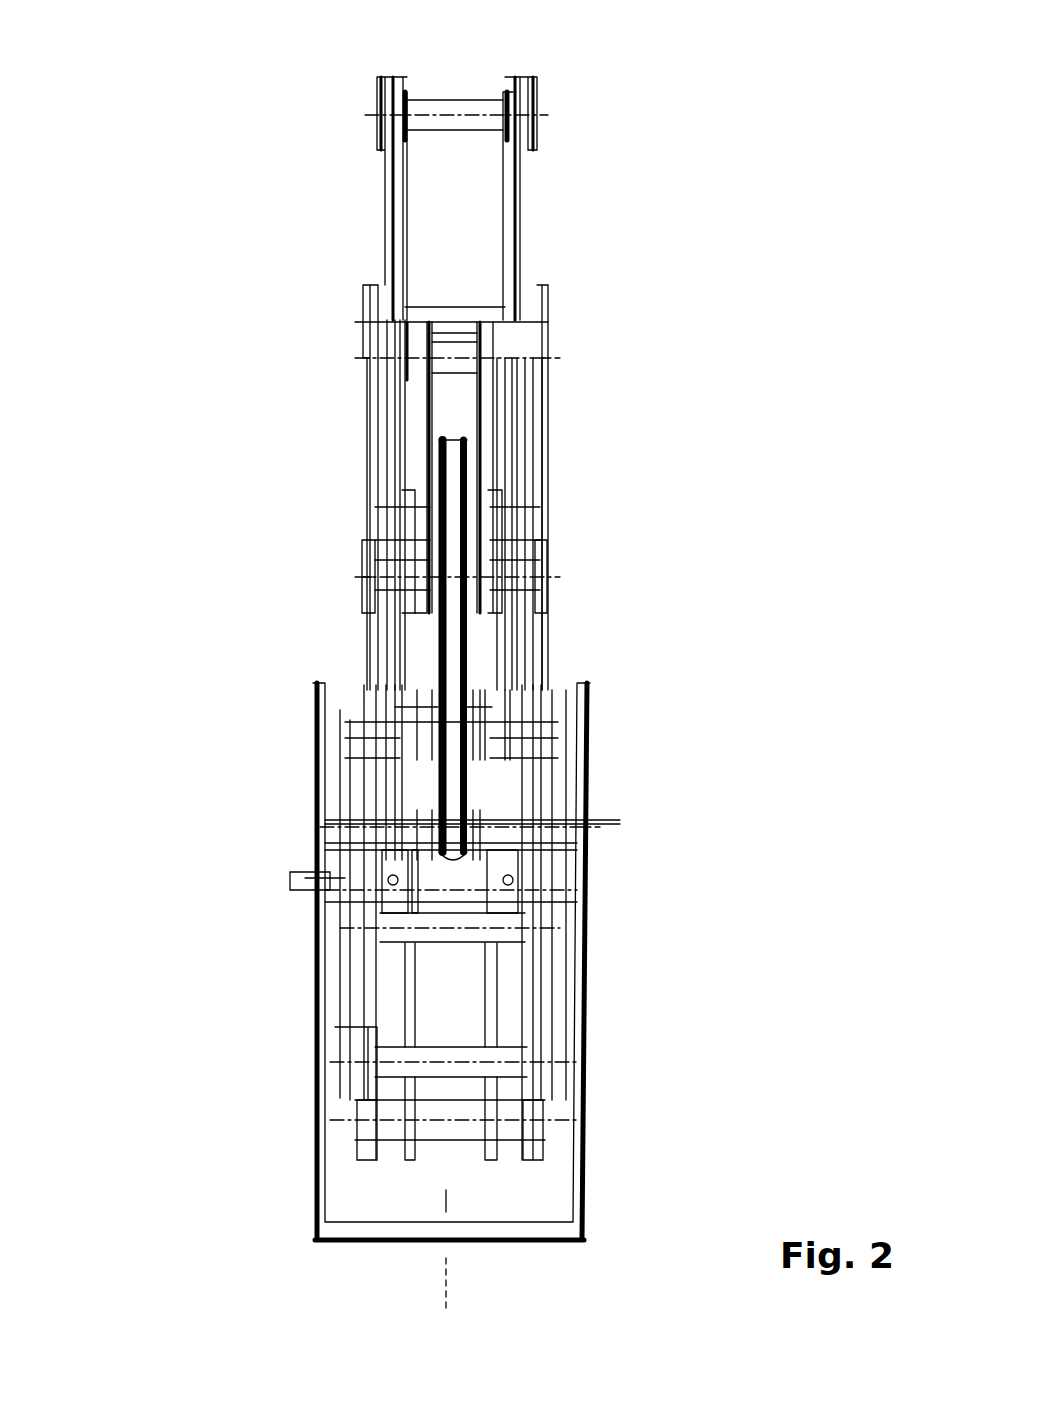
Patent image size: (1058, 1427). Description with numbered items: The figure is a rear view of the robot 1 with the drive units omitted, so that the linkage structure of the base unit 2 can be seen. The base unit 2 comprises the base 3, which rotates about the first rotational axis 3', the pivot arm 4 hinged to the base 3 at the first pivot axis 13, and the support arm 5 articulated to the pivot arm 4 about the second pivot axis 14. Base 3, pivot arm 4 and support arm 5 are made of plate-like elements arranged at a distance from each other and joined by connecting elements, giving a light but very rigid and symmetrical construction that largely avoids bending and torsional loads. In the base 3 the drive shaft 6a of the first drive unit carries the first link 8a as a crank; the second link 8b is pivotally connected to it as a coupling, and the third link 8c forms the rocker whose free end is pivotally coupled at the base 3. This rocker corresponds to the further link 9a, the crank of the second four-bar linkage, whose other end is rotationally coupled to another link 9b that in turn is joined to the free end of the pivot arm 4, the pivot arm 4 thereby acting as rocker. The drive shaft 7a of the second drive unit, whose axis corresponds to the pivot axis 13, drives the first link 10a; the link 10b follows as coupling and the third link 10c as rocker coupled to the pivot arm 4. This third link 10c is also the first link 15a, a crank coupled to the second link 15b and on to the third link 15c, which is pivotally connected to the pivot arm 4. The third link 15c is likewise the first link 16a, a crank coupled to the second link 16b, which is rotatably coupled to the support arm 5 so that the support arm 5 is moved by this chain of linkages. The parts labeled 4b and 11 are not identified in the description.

The robot 1 is at (693, 268).
The base unit 2 is at (662, 922).
The base 3 is at (484, 961).
The first rotational axis 3' is at (482, 1288).
The pivot arm 4 is at (535, 636).
The outer tube wall 4b is at (378, 470).
The support arm 5 is at (560, 172).
The drive shaft 6a is at (298, 885).
The drive shaft 7a is at (615, 822).
The first link 8a is at (490, 1020).
The second link 8b is at (366, 1148).
The third link 8c is at (311, 1045).
The further link 9a is at (322, 985).
The another link 9b is at (356, 1032).
The first link 10a is at (470, 782).
The link 10b is at (465, 590).
The third link 10c is at (505, 470).
The bearing 11 is at (480, 113).
The first pivot axis 13 is at (549, 922).
The second pivot axis 14 is at (366, 318).
The first link 15a is at (527, 524).
The second link 15b is at (380, 415).
The third link 15c is at (500, 413).
The first link 16a is at (542, 467).
The second link 16b is at (520, 242).